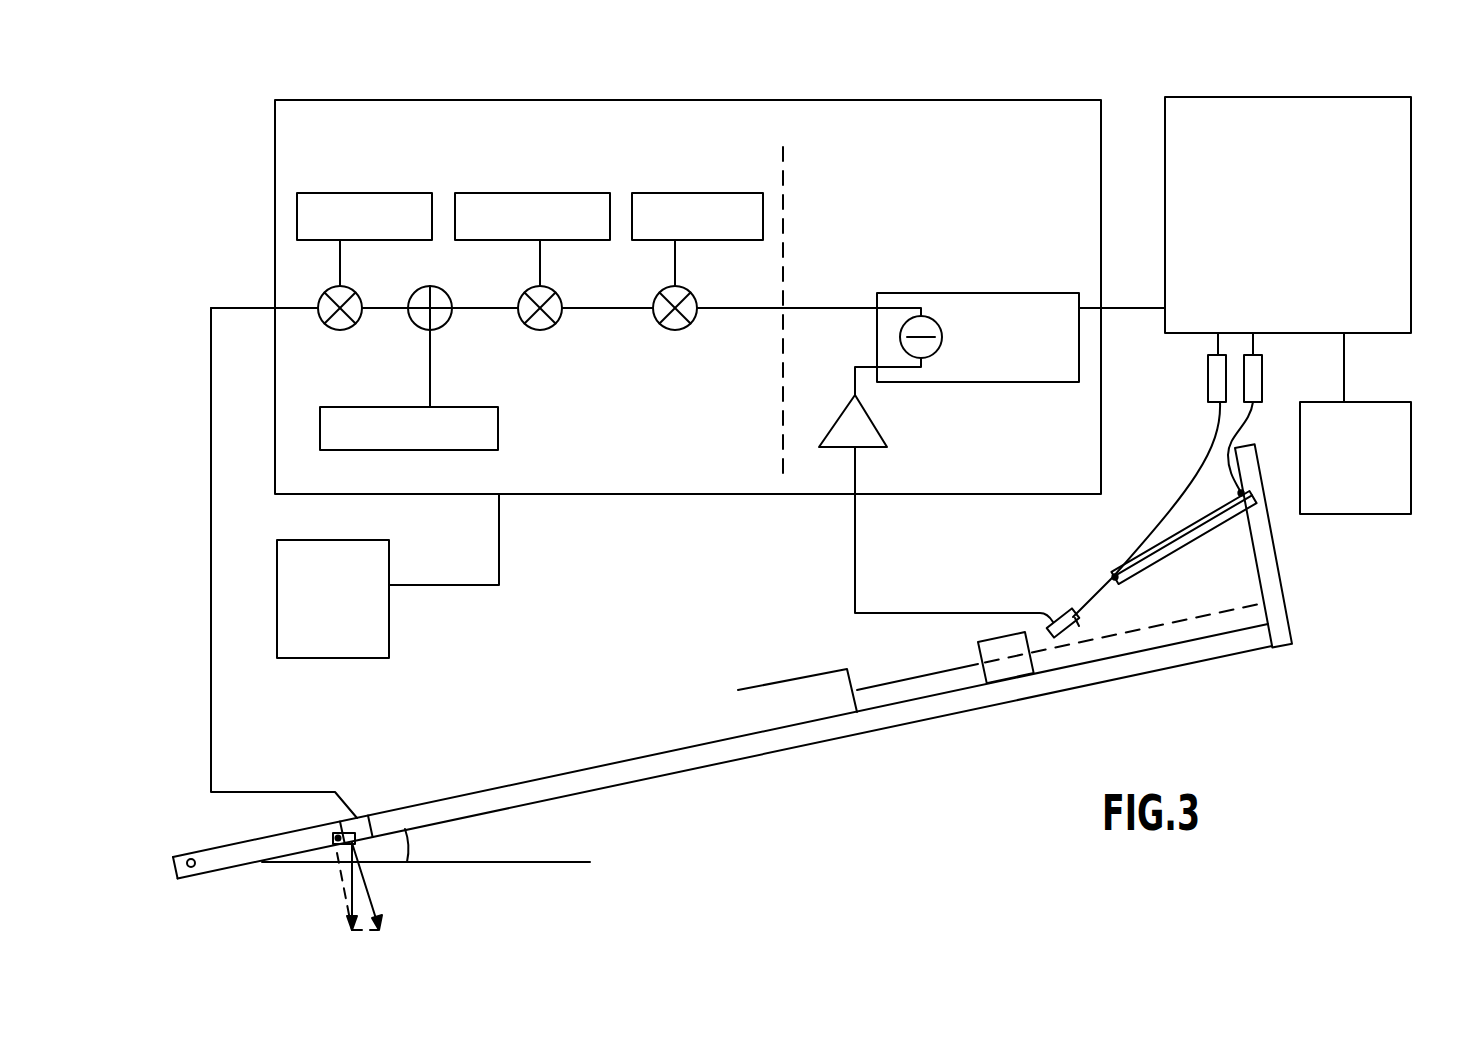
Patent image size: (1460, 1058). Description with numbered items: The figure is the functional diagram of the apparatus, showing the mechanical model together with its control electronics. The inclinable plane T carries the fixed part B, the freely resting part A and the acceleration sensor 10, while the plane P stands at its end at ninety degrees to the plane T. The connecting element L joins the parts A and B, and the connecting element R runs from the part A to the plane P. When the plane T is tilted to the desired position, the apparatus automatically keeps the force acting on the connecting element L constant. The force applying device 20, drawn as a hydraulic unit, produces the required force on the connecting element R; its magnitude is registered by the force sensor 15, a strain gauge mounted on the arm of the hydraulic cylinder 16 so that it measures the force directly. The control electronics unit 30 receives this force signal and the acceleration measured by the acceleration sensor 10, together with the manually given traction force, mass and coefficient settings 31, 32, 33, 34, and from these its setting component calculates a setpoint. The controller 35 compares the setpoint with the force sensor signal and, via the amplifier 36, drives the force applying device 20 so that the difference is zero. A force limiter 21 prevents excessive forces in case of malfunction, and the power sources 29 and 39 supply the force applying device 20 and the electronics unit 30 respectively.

The acceleration sensor 10 is at (368, 818).
The force sensor 15 is at (1077, 624).
The hydraulic cylinder arm 16 is at (1207, 533).
The force applying device 20 is at (1185, 118).
The force limiter 21 is at (1247, 392).
The power source of the force applying device 29 is at (1367, 483).
The control electronics unit 30 is at (468, 135).
The traction force setting input 31 is at (492, 426).
The mass setting input 32 is at (350, 207).
The coefficient K_x setting input 33 is at (560, 207).
The coefficient K_y setting input 34 is at (718, 207).
The controller 35 is at (977, 333).
The amplifier 36 is at (868, 432).
The power source of the electronics unit 39 is at (372, 615).
The part A is at (980, 655).
The part B is at (772, 697).
The connecting element L is at (905, 690).
The plane P is at (1272, 577).
The connecting element R is at (1090, 608).
The plane T is at (635, 765).